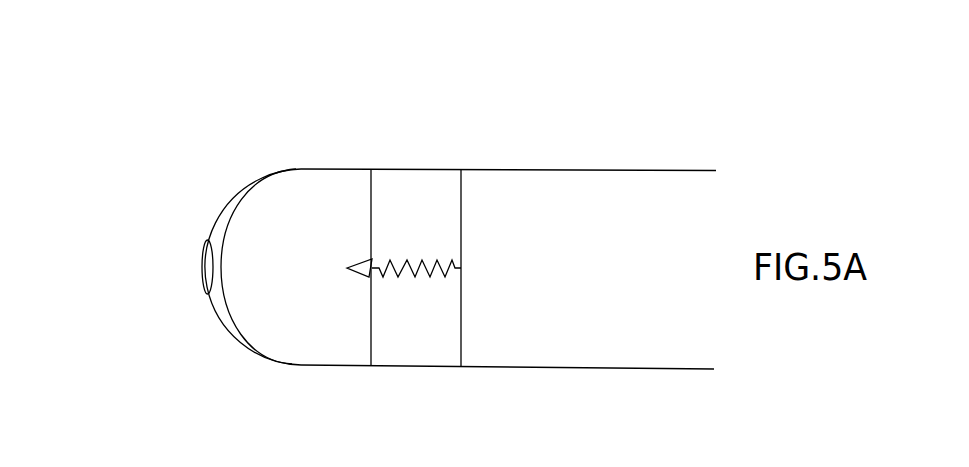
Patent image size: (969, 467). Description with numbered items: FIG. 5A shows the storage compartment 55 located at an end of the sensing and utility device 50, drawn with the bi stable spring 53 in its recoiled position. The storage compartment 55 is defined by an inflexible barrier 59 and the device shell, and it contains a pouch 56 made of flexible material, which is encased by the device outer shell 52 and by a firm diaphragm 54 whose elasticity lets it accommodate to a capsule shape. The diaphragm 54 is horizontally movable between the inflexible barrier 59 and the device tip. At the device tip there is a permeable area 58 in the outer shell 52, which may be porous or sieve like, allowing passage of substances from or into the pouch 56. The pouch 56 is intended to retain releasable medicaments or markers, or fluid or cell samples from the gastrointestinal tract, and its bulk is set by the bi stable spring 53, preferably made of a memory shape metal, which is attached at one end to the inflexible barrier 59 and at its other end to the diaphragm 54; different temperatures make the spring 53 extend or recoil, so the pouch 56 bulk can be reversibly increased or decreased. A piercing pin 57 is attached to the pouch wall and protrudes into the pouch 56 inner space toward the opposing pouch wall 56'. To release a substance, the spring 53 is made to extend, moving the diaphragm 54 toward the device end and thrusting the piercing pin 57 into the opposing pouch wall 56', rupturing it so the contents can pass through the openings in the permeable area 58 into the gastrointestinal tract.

The sensing and utility device 50 is at (613, 133).
The device outer shell 52 is at (207, 307).
The bi stable spring 53 is at (422, 275).
The diaphragm 54 is at (371, 196).
The storage compartment 55 is at (266, 175).
The pouch 56 is at (266, 301).
The opposing pouch wall 56' is at (191, 363).
The piercing pin 57 is at (360, 274).
The permeable area 58 is at (207, 268).
The inflexible barrier 59 is at (461, 337).